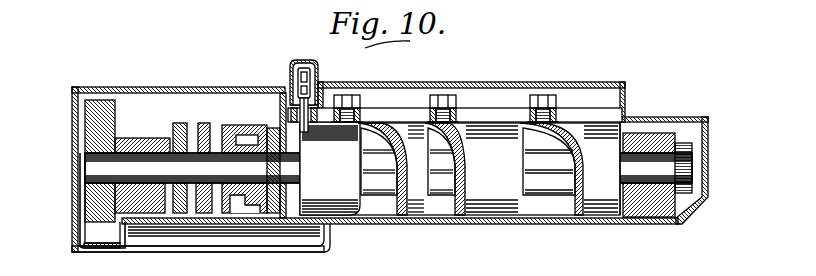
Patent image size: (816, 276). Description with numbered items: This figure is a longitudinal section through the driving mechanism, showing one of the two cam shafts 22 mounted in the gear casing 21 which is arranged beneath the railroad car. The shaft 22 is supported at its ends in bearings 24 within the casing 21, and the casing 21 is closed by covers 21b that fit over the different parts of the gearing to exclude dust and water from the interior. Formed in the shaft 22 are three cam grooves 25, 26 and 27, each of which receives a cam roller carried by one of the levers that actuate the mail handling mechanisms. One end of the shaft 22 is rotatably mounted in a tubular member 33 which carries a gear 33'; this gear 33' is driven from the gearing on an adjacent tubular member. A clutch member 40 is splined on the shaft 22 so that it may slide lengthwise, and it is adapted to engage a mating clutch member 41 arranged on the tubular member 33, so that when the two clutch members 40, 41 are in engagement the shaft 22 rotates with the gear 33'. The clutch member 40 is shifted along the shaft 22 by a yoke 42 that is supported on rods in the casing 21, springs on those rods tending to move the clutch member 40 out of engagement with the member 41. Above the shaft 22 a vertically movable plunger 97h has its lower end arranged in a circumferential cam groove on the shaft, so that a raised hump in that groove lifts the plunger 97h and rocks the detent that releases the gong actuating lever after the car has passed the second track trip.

The cover 21b is at (92, 87).
The bearing 24 is at (142, 138).
The yoke 42 is at (234, 125).
The gear 33' is at (73, 159).
The mating clutch member 41 is at (180, 123).
The clutch member 40 is at (205, 123).
The plunger 97h is at (308, 134).
The tubular member 33 is at (361, 182).
The cam shaft 22 is at (115, 176).
The cam groove 25 is at (377, 208).
The gear casing 21 is at (445, 210).
The cam groove 26 is at (483, 210).
The cam groove 27 is at (563, 210).